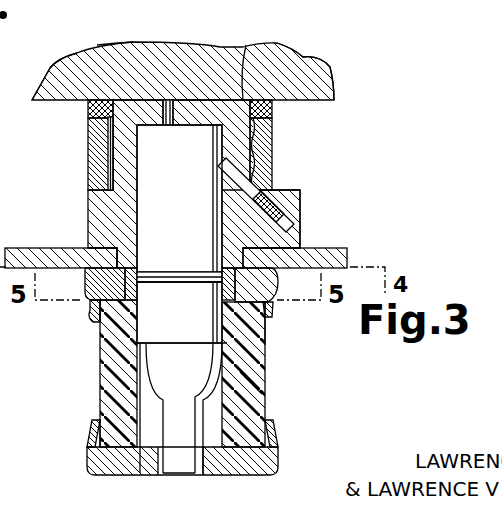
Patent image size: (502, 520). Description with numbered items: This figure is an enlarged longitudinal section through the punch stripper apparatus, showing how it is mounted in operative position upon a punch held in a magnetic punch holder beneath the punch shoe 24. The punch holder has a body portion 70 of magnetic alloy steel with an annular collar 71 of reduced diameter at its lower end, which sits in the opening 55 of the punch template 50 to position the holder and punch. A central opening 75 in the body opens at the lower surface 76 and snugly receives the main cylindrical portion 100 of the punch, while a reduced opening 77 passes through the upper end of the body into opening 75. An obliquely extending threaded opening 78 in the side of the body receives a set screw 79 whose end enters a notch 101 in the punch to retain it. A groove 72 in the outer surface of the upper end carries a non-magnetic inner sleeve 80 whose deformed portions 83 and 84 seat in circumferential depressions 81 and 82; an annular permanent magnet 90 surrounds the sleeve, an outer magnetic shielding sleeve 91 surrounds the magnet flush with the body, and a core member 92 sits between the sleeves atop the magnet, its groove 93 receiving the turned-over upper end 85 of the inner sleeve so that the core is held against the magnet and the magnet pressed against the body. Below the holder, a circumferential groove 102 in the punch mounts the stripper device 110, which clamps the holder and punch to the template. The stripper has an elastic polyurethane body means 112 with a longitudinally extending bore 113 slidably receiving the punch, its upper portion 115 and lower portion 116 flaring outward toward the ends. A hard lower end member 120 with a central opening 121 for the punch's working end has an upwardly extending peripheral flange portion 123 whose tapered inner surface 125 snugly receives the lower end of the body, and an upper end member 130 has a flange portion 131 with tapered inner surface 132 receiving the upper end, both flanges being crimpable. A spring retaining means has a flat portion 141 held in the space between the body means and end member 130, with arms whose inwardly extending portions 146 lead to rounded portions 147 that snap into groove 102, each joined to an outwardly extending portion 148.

The punch shoe 24 is at (200, 67).
The upper end of inner sleeve 85 is at (72, 63).
The inner magnetic insulating sleeve 80 is at (108, 52).
The reduced opening 77 is at (172, 100).
The groove 72 is at (251, 63).
The circumferentially extending groove 93 is at (264, 96).
The body portion 70 is at (95, 202).
The deformed portion 83 is at (108, 132).
The deformed portion 84 is at (107, 170).
The circumferentially extending depression 81 is at (117, 133).
The circumferentially extending depression 82 is at (118, 173).
The core member 92 is at (272, 106).
The outer magnetic shielding sleeve 91 is at (274, 126).
The permanent magnet 90 is at (262, 156).
The obliquely extending threaded opening 78 is at (300, 220).
The set screw 79 is at (278, 196).
The central opening 75 is at (140, 233).
The notch 101 is at (222, 179).
The main cylindrical portion 100 is at (176, 231).
The punch template 50 is at (10, 247).
The annular collar 71 is at (110, 255).
The opening 55 is at (245, 262).
The outwardly extending portion 148 is at (88, 277).
The second end member 130 is at (90, 291).
The lower surface 76 is at (128, 282).
The rounded portion 147 is at (157, 272).
The circumferentially extending groove 102 is at (178, 281).
The inwardly extending portion 146 is at (163, 296).
The upper portion of outer surface 115 is at (268, 302).
The peripheral flange portion 131 is at (107, 322).
The inner surface of flange portion 132 is at (102, 345).
The stripper device 110 is at (90, 367).
The body means 112 is at (258, 362).
The flat portion 141 is at (265, 332).
The longitudinally extending bore 113 is at (258, 394).
The inner surface of flange portion 125 is at (100, 428).
The central opening 121 is at (163, 475).
The lower end member 120 is at (115, 476).
The peripheral flange portion 123 is at (87, 438).
The lower portion of outer surface 116 is at (273, 433).